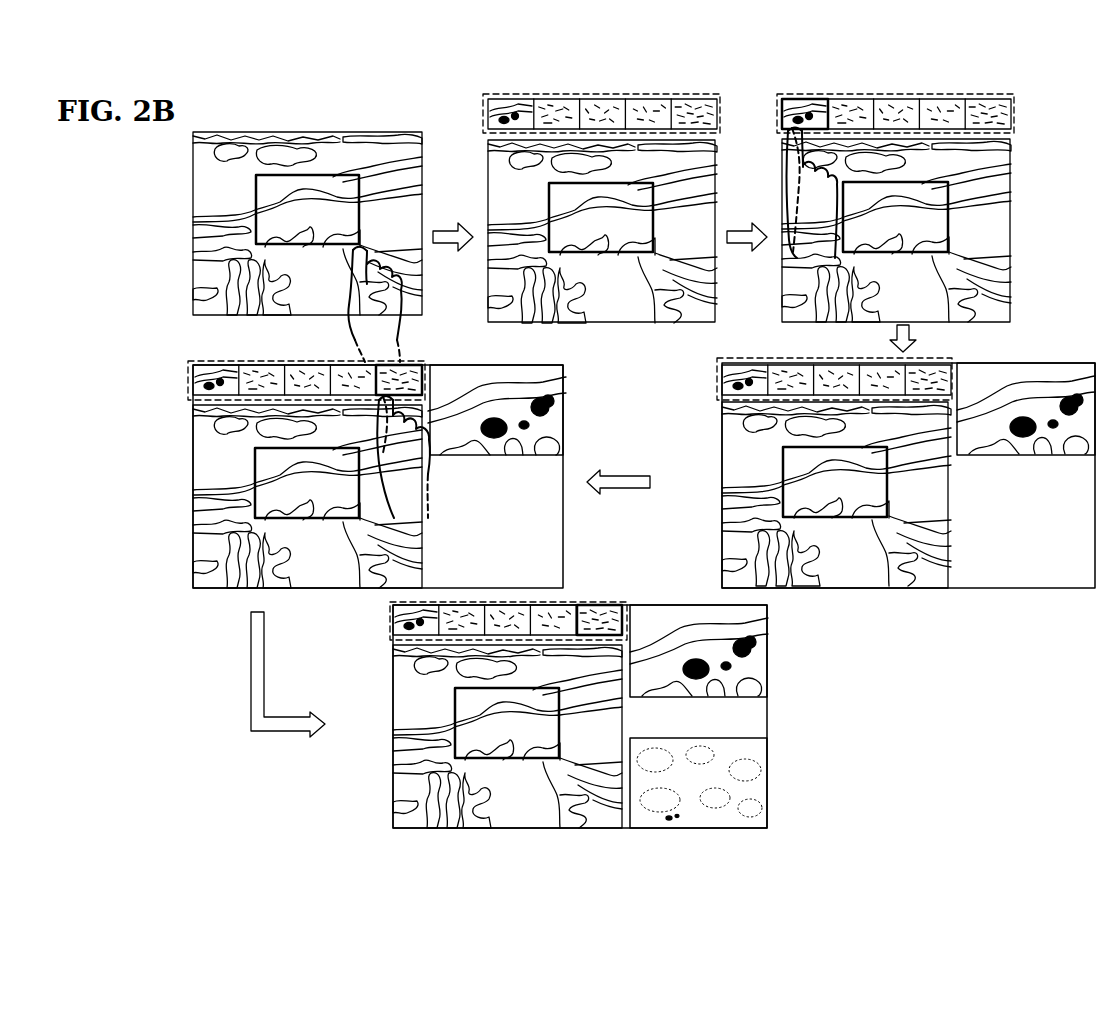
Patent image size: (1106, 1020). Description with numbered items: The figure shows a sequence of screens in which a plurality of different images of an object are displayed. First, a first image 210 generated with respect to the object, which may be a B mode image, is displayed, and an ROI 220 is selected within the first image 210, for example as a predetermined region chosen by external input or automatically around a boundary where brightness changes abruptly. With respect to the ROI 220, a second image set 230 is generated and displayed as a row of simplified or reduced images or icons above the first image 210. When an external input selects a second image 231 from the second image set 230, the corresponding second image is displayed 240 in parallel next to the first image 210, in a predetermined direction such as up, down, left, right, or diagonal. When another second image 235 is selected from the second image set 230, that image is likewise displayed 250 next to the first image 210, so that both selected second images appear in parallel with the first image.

The first image 210 is at (215, 162).
The ROI 220 is at (256, 190).
The second image set 230 is at (488, 118).
The selected image 231 is at (782, 115).
The second image 235 is at (412, 364).
The display of selected second image 240 is at (1026, 363).
The display of selected second image 250 is at (695, 738).